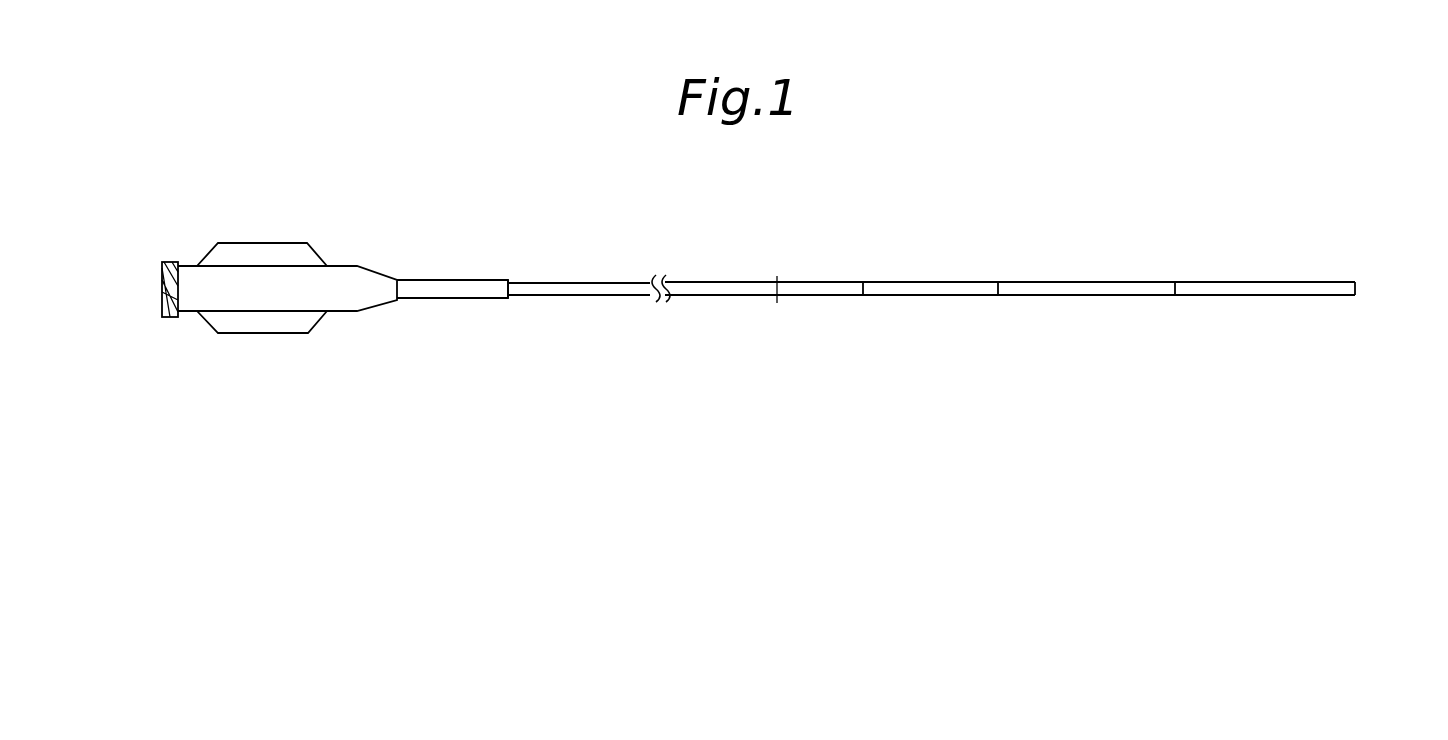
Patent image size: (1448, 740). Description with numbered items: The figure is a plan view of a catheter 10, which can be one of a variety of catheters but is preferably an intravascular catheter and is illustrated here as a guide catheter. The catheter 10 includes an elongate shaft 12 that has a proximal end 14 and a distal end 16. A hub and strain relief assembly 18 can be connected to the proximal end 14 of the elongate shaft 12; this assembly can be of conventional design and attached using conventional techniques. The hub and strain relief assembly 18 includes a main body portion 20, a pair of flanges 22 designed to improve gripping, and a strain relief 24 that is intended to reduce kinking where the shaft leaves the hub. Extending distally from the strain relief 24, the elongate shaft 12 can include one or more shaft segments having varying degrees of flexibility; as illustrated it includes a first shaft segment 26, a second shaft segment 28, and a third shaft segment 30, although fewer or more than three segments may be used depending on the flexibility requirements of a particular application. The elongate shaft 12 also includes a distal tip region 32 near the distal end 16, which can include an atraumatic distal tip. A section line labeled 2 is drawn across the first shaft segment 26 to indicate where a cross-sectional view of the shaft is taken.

The catheter 10 is at (426, 222).
The elongate shaft 12 is at (851, 240).
The proximal end 14 is at (500, 346).
The distal end 16 is at (1353, 330).
The hub and strain relief assembly 18 is at (176, 346).
The main body portion 20 is at (302, 298).
The pair of flanges 22 is at (262, 255).
The strain relief 24 is at (455, 287).
The first shaft segment 26 is at (585, 293).
The second shaft segment 28 is at (932, 297).
The third shaft segment 30 is at (1087, 296).
The distal tip region 32 is at (1265, 282).
The section line 2- 2 is at (752, 328).